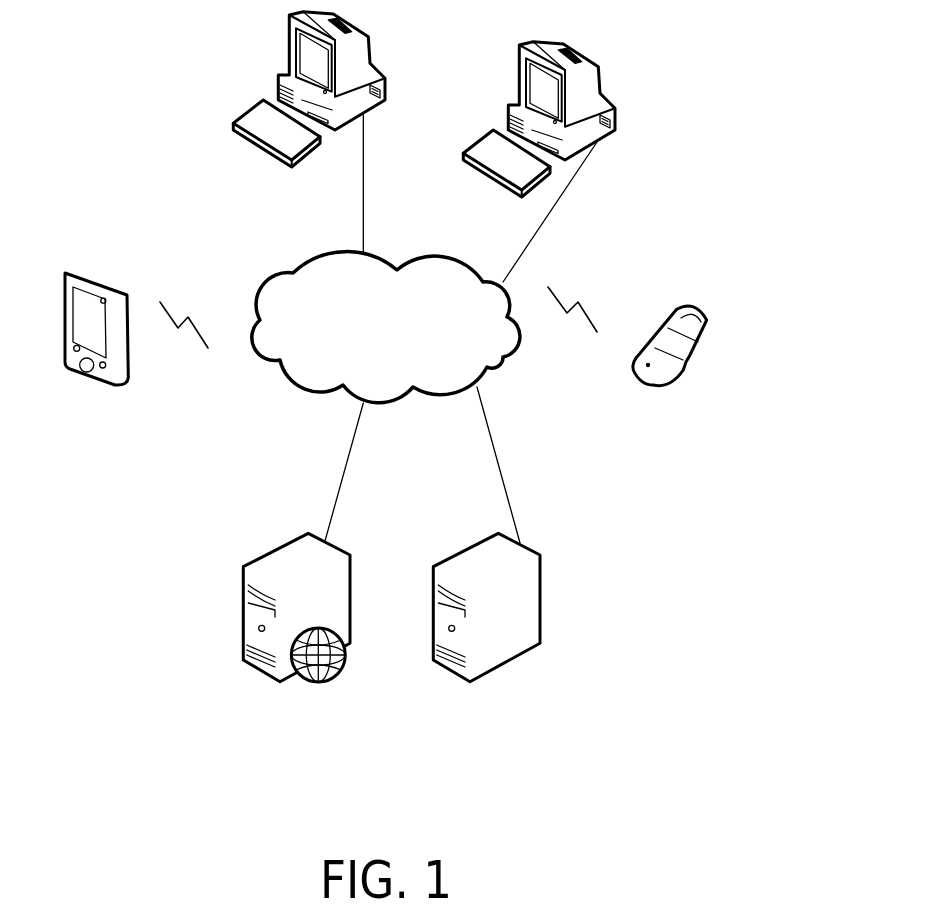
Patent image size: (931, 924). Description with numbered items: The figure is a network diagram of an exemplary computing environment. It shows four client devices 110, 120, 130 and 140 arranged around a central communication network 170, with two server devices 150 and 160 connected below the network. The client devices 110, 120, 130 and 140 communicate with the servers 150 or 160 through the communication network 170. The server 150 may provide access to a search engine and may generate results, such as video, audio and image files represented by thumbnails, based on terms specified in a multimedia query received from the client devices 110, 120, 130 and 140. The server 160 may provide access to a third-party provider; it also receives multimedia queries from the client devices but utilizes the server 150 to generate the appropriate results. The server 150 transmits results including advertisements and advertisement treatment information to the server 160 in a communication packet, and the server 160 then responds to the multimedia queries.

The client device 110 is at (366, 26).
The client device 120 is at (596, 73).
The client device 130 is at (710, 315).
The client device 140 is at (103, 273).
The server device 150 is at (352, 555).
The server device 160 is at (541, 562).
The communication network 170 is at (413, 257).